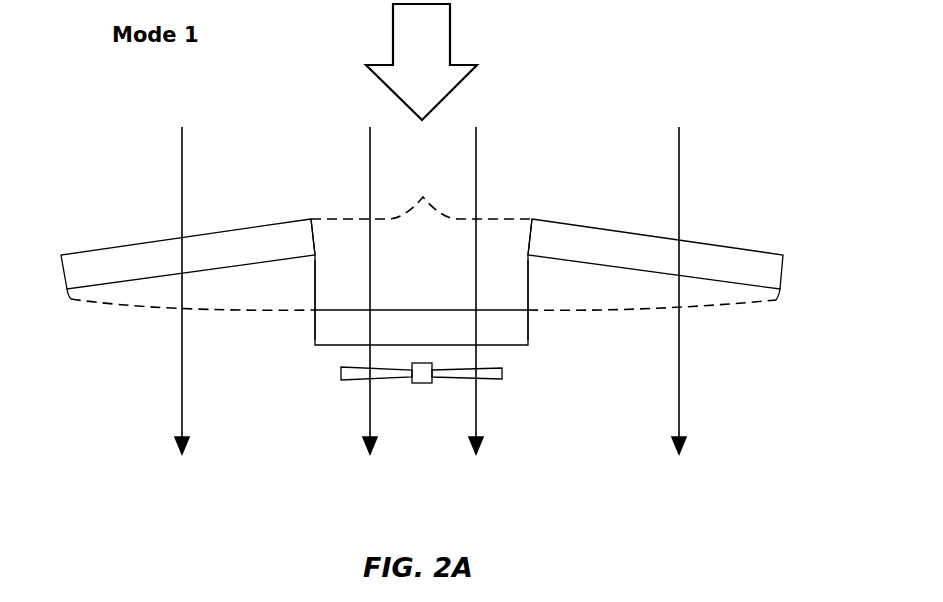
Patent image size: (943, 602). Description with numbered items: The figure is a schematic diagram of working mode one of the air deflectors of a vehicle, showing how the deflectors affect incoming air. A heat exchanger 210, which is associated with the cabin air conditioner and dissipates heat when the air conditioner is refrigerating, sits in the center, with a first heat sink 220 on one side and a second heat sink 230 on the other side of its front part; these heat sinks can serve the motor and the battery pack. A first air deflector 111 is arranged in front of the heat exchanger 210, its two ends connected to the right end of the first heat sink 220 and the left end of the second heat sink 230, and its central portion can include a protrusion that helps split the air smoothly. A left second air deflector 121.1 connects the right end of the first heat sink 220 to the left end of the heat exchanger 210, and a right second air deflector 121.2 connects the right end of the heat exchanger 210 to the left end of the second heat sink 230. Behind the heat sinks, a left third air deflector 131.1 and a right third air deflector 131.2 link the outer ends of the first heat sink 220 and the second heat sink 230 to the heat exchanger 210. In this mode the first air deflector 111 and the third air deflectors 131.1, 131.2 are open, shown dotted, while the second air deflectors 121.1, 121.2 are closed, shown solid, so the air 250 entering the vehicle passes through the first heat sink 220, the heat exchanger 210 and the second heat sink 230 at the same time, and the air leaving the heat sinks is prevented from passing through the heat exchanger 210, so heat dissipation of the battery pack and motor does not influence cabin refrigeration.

The air 250 is at (450, 30).
The first air deflector 111 is at (490, 219).
The heat exchanger 210 is at (421, 301).
The first heat sink 220 is at (188, 254).
The second heat sink 230 is at (655, 254).
The left third air deflector 131.1 is at (128, 307).
The right third air deflector 131.2 is at (708, 308).
The left second air deflector 121.1 is at (313, 292).
The right second air deflector 121.2 is at (529, 290).